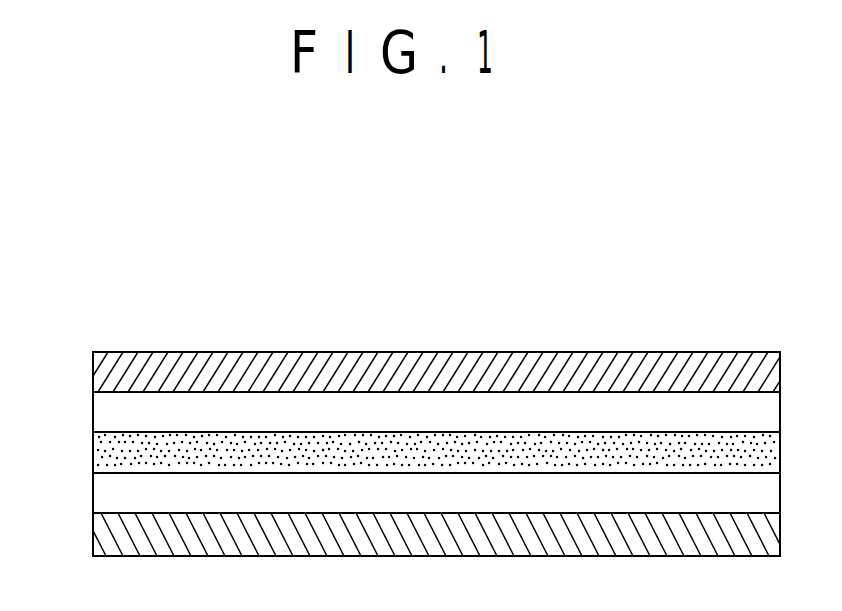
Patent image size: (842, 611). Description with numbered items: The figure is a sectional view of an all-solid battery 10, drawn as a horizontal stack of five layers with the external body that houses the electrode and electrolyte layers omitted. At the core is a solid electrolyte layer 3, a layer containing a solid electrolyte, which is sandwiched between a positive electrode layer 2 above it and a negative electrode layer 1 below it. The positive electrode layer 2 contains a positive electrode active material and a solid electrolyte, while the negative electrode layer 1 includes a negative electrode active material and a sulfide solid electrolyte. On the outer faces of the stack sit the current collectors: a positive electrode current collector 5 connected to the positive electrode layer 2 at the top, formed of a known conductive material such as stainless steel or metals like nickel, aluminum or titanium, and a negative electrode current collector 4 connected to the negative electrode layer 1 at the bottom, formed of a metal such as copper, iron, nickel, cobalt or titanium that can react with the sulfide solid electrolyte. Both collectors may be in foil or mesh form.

The all-solid battery 10 is at (450, 293).
The positive electrode current collector 5 is at (110, 368).
The positive electrode layer 2 is at (105, 411).
The solid electrolyte layer 3 is at (108, 454).
The negative electrode layer 1 is at (108, 494).
The negative electrode current collector 4 is at (105, 541).